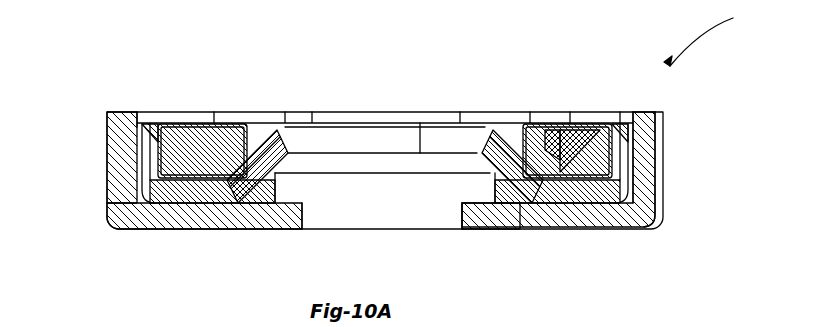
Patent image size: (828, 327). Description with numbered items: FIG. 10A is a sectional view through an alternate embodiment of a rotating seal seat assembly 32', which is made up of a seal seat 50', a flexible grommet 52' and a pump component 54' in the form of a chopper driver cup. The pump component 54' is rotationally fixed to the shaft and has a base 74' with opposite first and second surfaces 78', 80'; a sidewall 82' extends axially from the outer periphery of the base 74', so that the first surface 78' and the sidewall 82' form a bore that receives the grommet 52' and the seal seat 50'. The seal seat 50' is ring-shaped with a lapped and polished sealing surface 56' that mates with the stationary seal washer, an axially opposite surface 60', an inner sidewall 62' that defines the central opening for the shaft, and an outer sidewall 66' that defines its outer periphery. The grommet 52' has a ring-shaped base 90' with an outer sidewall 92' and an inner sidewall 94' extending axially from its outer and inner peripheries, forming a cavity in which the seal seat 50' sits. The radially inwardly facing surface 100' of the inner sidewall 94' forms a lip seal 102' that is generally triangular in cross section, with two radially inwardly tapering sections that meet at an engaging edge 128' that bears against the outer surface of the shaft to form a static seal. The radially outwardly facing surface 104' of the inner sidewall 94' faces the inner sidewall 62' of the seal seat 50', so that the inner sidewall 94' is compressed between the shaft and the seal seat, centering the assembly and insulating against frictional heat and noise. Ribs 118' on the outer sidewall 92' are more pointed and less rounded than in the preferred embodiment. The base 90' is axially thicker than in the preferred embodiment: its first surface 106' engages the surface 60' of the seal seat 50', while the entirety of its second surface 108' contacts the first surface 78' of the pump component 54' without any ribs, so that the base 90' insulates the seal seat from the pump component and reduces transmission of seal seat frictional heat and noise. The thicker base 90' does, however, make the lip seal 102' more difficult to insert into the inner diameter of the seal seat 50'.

The rotating seal seat assembly 32' is at (716, 35).
The seal seat 50' is at (573, 108).
The grommet 52' is at (512, 127).
The pump component 54' is at (423, 165).
The sealing surface 56' is at (196, 113).
The surface 60' is at (169, 200).
The inner sidewall 62' is at (261, 131).
The outer sidewall 66' is at (125, 106).
The base 74' is at (202, 238).
The first surface 78' is at (227, 218).
The second surface 80' is at (347, 245).
The sidewall 82' is at (84, 157).
The base 90' is at (579, 202).
The outer sidewall 92' is at (602, 191).
The inner sidewall 94' is at (491, 233).
The inner surface 100' is at (382, 207).
The lip seal 102' is at (385, 102).
The outer surface 104' is at (537, 118).
The first surface 106' is at (620, 192).
The second surface 108' is at (576, 103).
The ribs 118' is at (683, 157).
The engaging edge 128' is at (385, 111).